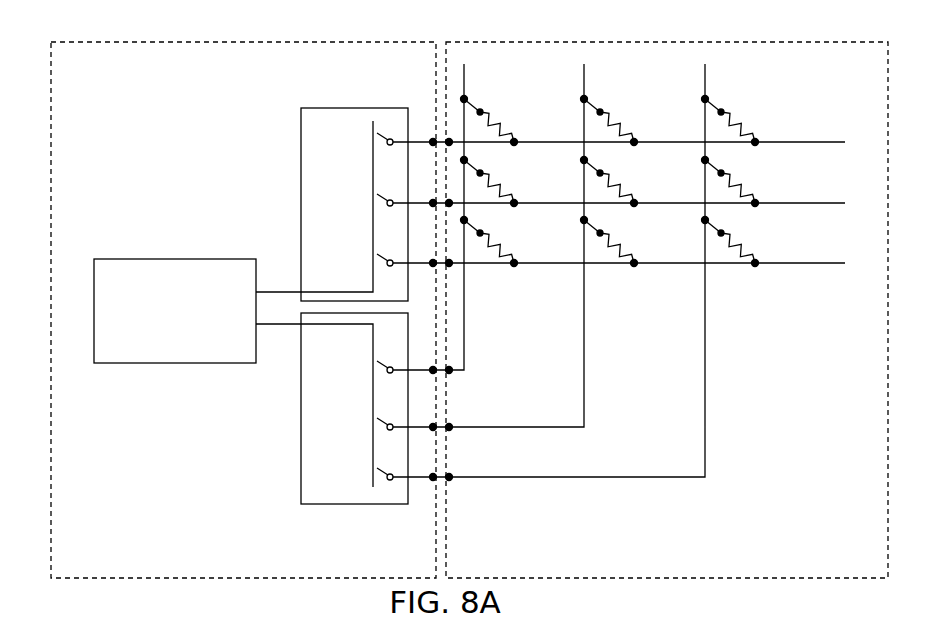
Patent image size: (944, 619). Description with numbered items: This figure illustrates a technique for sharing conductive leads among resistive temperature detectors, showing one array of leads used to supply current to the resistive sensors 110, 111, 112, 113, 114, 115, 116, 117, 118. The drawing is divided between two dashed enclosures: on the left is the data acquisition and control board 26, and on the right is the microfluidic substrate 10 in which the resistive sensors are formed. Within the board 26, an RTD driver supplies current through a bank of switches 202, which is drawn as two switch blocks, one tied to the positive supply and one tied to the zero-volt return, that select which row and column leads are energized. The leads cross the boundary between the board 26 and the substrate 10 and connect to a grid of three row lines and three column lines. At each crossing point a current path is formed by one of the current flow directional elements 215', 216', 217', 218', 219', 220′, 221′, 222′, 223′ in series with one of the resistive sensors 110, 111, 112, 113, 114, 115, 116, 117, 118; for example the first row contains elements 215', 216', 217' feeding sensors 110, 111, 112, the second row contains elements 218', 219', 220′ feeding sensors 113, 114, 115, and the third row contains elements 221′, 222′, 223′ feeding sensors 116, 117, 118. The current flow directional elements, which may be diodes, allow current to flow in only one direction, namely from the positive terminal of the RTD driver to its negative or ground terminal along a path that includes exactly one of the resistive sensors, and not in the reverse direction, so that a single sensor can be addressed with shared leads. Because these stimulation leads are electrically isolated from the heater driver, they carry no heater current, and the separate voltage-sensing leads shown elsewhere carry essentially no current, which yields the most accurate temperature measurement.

The data acquisition and control board 26 is at (105, 42).
The microfluidic substrate 10 is at (502, 42).
The multiplexer switch bank 202 is at (413, 287).
The current flow directional element 215' is at (506, 102).
The current flow directional element 216' is at (626, 102).
The current flow directional element 217' is at (747, 102).
The current flow directional element 218' is at (506, 163).
The current flow directional element 219' is at (626, 163).
The current flow directional element 220′ is at (747, 163).
The current flow directional element 221′ is at (506, 223).
The current flow directional element 222′ is at (626, 223).
The current flow directional element 223′ is at (747, 223).
The resistive sensor 110 is at (530, 128).
The resistive sensor 111 is at (650, 128).
The resistive sensor 112 is at (771, 128).
The resistive sensor 113 is at (530, 189).
The resistive sensor 114 is at (650, 189).
The resistive sensor 115 is at (771, 189).
The resistive sensor 116 is at (530, 249).
The resistive sensor 117 is at (650, 249).
The resistive sensor 118 is at (771, 249).